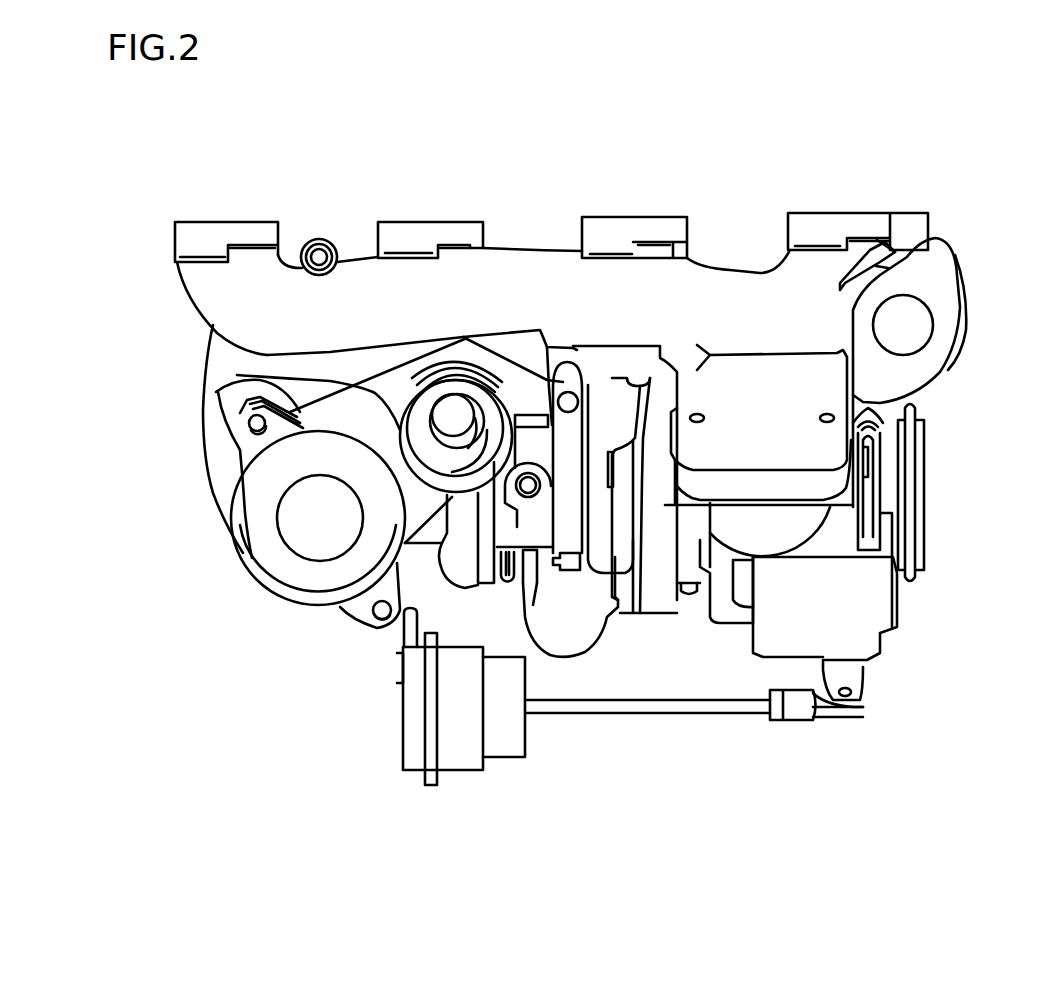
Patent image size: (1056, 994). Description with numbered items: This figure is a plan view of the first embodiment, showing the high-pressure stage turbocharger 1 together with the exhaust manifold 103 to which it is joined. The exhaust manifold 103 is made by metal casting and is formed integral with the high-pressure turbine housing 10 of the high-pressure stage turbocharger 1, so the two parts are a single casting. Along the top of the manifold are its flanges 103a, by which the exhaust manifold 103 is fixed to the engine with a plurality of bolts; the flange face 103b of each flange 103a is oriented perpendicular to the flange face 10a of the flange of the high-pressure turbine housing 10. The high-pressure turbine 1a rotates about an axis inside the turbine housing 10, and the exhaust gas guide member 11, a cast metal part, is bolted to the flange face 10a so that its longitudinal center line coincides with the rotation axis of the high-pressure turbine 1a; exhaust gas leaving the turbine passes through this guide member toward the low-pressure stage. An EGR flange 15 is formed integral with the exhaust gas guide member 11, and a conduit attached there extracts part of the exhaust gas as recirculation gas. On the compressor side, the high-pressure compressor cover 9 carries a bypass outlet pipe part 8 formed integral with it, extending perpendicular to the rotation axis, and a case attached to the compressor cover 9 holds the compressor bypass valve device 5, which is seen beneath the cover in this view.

The high-pressure stage turbocharger 1 is at (500, 585).
The high-pressure turbine 1a is at (570, 660).
The compressor bypass valve device 5 is at (285, 607).
The bypass outlet pipe part 8 is at (260, 377).
The high-pressure compressor cover 9 is at (430, 532).
The high-pressure turbine housing 10 is at (627, 615).
The flange face 10a is at (640, 583).
The exhaust gas guide member 11 is at (662, 505).
The EGR flange 15 is at (937, 327).
The exhaust manifold 103 is at (527, 263).
The flange 103a is at (257, 228).
The flange face 103b is at (210, 220).